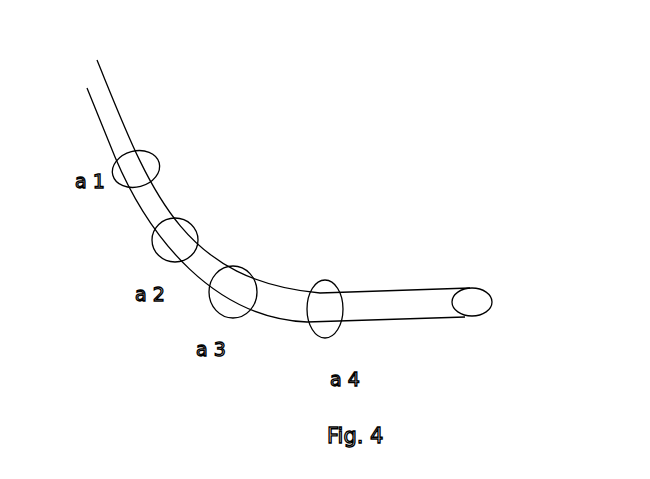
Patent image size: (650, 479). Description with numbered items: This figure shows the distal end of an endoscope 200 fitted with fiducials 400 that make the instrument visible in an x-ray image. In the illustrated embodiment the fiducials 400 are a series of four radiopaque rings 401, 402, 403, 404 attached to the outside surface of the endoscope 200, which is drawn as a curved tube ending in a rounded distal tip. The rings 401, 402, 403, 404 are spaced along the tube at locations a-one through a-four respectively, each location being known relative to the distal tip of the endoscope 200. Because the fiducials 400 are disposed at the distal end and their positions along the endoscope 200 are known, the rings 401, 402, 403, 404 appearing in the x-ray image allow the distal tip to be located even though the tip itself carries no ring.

The endoscope 200 is at (120, 97).
The fiducials 400 is at (258, 196).
The ring 401 is at (305, 122).
The ring 402 is at (200, 218).
The ring 403 is at (248, 262).
The ring 404 is at (328, 200).